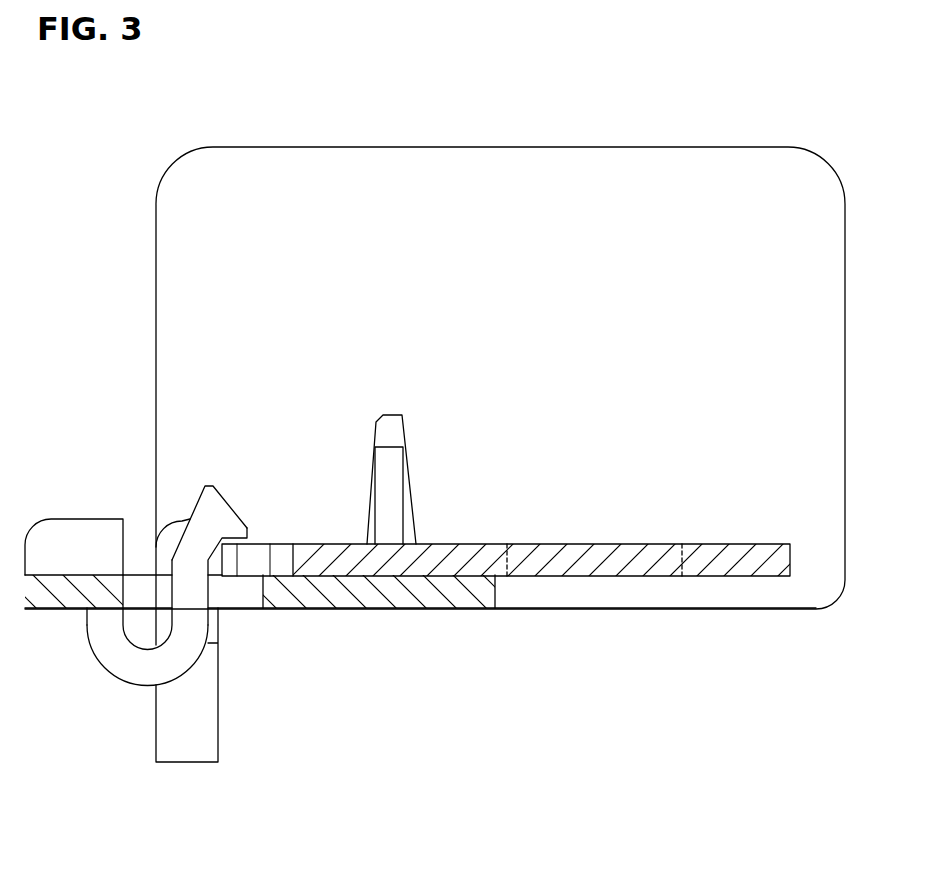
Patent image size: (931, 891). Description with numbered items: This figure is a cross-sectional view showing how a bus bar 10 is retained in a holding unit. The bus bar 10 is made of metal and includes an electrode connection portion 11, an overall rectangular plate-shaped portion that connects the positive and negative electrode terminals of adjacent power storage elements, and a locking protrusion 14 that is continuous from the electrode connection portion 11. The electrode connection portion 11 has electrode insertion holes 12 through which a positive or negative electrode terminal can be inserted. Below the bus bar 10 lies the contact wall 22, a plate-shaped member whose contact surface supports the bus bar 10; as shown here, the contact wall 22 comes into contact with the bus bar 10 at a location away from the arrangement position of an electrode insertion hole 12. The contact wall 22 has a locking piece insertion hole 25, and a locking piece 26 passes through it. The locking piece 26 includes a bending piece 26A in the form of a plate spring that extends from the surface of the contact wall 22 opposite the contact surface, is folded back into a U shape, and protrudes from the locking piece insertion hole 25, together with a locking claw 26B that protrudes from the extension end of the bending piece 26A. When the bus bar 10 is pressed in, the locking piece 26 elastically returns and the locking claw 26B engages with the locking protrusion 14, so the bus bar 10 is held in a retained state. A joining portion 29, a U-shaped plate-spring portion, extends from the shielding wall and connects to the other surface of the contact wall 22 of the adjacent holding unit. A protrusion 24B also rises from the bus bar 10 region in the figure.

The bus bar 10 is at (710, 489).
The electrode connection portion 11 is at (742, 565).
The electrode insertion hole 12 is at (678, 560).
The locking protrusion 14 is at (252, 565).
The contact wall 22 is at (393, 597).
The protrusion 24B is at (392, 467).
The locking piece insertion hole 25 is at (124, 592).
The locking piece 26 is at (78, 670).
The bending piece 26A is at (128, 667).
The locking claw 26B is at (218, 507).
The joining portion 29 is at (200, 737).